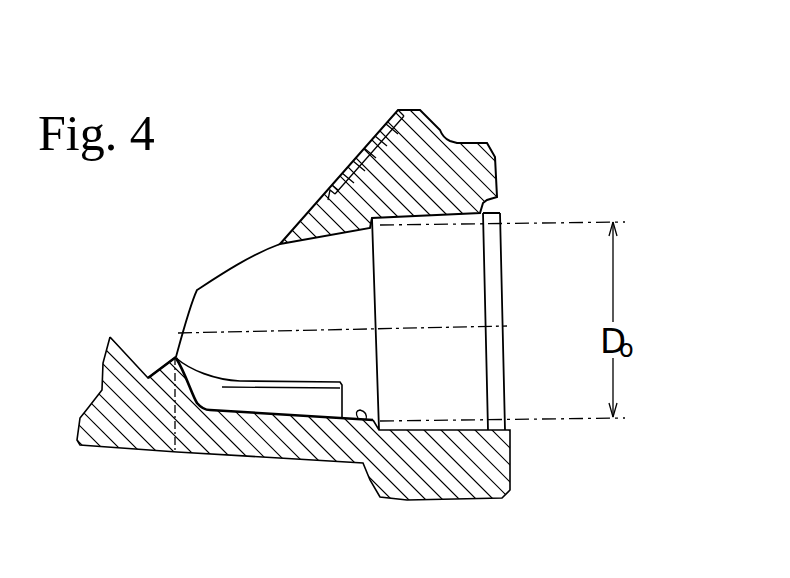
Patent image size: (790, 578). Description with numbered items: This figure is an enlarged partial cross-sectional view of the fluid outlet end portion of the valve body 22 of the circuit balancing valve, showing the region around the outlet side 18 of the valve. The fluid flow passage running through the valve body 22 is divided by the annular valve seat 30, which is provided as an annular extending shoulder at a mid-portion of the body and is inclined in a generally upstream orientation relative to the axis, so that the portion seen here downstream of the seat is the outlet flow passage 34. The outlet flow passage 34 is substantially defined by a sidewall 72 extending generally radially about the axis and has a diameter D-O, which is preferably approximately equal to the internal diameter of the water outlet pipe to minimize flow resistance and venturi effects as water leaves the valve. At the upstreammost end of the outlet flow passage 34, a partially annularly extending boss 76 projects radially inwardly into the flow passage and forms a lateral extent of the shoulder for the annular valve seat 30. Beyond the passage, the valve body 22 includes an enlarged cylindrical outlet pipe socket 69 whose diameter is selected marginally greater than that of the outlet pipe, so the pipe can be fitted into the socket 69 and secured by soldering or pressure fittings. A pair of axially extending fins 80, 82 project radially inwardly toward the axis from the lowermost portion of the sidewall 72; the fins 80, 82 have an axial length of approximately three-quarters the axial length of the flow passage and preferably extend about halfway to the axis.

The outlet side 18 is at (499, 173).
The valve body 22 is at (417, 140).
The annular valve seat 30 is at (128, 350).
The downstream outlet flow passage 34 is at (305, 315).
The outlet pipe socket 69 is at (458, 349).
The sidewall 72 is at (365, 437).
The partially annularly extending boss 76 is at (180, 354).
The axially extending fin 80 is at (232, 397).
The axially extending fin 82 is at (303, 388).